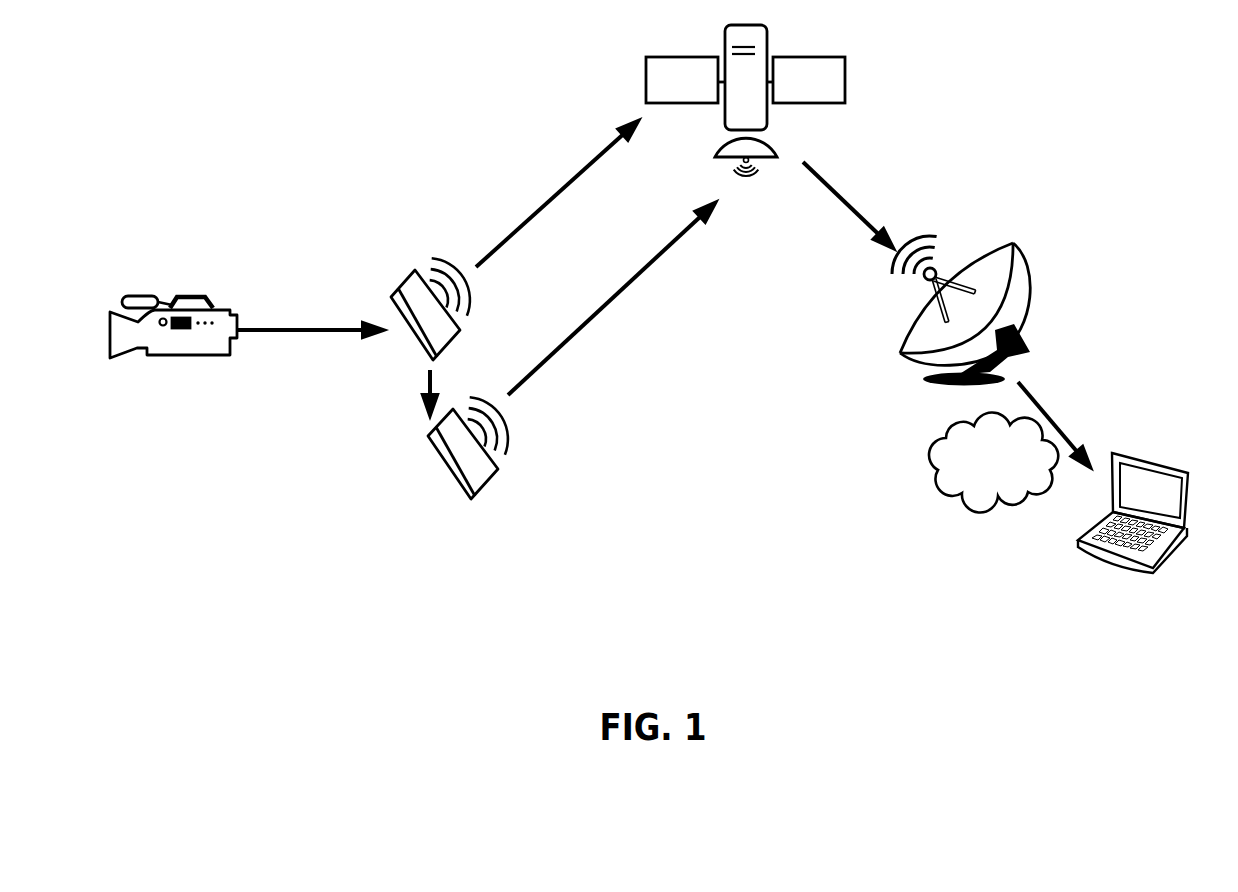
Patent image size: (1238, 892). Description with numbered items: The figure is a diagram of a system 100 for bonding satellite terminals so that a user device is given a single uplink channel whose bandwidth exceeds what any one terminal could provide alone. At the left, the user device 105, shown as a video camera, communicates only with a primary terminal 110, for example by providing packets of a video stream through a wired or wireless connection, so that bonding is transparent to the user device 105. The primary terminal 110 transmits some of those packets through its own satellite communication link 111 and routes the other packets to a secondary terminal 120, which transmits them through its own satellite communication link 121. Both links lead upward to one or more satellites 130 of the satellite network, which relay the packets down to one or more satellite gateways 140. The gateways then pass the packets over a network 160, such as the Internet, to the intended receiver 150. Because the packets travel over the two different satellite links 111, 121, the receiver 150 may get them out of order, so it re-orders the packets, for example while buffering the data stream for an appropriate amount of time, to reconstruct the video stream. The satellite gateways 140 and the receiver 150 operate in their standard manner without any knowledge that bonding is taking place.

The system 100 is at (278, 86).
The user device 105 is at (196, 297).
The primary terminal 110 is at (393, 290).
The satellite communication link 111 is at (556, 186).
The secondary terminal 120 is at (440, 470).
The satellite communication link 121 is at (624, 283).
The satellite 130 is at (797, 57).
The satellite gateway 140 is at (1026, 346).
The receiver 150 is at (1160, 460).
The network 160 is at (993, 463).